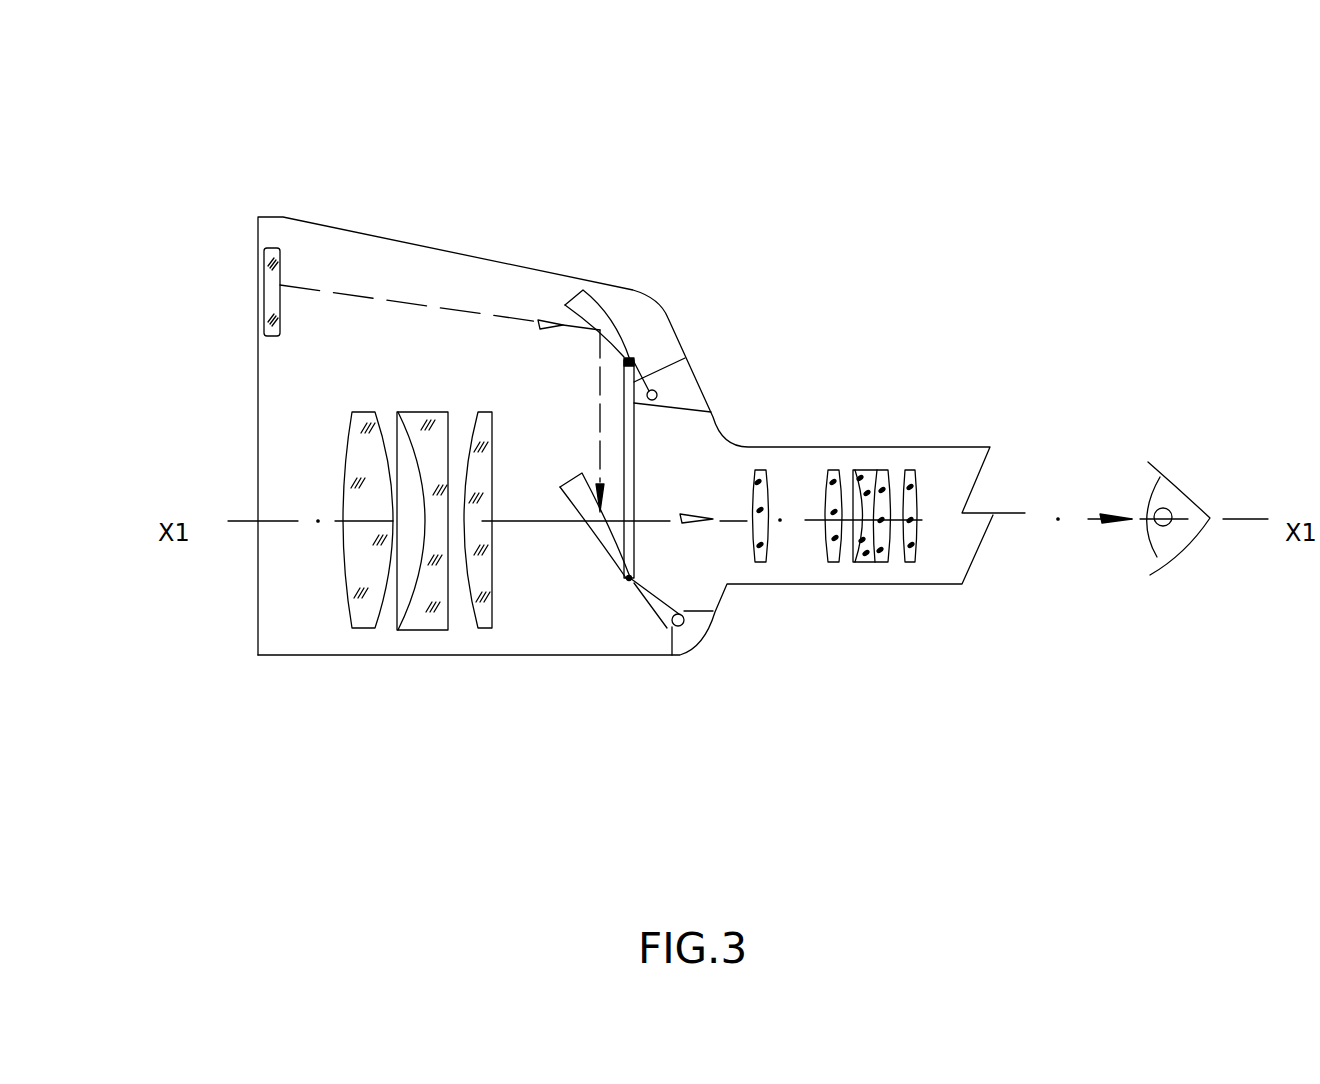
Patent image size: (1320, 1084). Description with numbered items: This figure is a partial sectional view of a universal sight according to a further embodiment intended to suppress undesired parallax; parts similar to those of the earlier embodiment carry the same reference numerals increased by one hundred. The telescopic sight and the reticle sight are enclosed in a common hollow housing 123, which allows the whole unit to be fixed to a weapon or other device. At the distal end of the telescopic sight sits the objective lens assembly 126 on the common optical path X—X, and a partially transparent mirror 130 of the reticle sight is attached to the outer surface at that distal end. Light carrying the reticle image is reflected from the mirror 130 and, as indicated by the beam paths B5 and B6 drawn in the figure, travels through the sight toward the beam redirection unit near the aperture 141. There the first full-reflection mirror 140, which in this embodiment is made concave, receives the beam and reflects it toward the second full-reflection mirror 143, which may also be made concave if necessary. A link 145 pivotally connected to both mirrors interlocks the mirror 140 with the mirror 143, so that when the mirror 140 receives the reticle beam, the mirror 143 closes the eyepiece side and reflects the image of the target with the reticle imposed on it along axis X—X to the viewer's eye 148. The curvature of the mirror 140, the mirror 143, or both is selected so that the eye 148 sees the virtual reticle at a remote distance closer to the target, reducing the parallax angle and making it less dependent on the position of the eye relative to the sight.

The common hollow housing 123 is at (400, 244).
The partially transparent mirror 130 is at (265, 280).
The light beam B5 is at (437, 306).
The light beam B6 is at (603, 457).
The objective lens assembly 126 is at (397, 644).
The first full-reflection mirror 140 is at (586, 302).
The aperture 141 is at (537, 452).
The second full-reflection mirror 143 is at (653, 604).
The link 145 is at (635, 460).
The viewer's eye 148 is at (1163, 537).